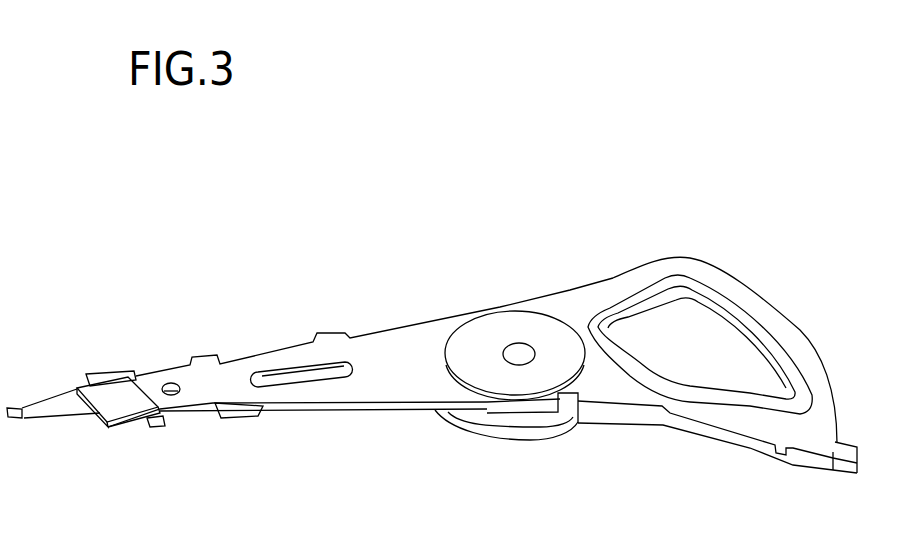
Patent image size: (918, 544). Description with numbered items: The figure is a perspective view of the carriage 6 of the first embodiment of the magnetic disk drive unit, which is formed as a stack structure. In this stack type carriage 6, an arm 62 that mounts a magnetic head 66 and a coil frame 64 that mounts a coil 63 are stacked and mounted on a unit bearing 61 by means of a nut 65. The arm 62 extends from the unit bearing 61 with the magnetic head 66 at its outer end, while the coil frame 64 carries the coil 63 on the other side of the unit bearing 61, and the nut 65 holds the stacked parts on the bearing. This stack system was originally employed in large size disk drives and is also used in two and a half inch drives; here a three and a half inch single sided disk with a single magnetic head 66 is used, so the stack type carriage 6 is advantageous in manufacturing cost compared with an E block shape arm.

The carriage 6 is at (405, 323).
The unit bearing 61 is at (480, 338).
The arm 62 is at (360, 340).
The coil 63 is at (723, 397).
The coil frame 64 is at (615, 283).
The nut 65 is at (513, 433).
The magnetic head 66 is at (22, 407).